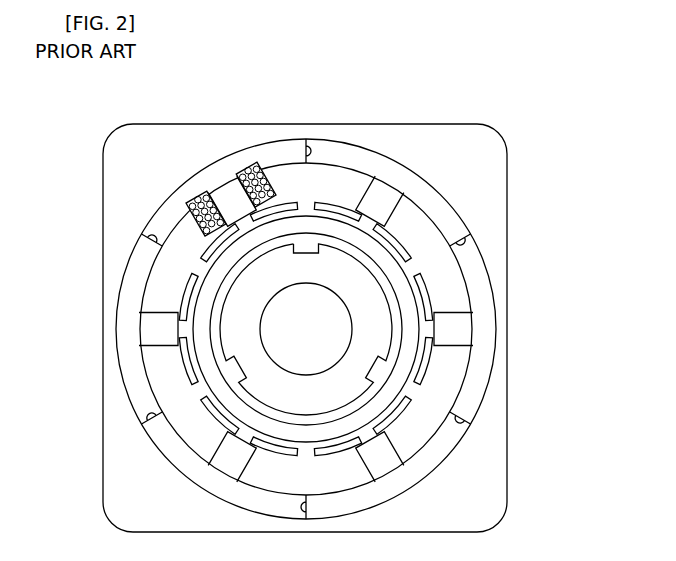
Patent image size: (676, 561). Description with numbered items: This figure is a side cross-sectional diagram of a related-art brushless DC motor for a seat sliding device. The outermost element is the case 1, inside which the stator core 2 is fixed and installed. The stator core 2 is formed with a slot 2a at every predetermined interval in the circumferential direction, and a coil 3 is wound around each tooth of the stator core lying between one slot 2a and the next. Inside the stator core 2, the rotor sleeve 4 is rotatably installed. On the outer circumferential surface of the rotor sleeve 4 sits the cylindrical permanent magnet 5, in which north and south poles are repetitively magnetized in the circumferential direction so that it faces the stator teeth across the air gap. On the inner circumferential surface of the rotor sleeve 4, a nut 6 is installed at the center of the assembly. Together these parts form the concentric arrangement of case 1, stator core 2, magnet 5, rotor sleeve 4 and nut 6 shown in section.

The case 1 is at (140, 143).
The stator core 2 is at (343, 152).
The slot 2a is at (225, 197).
The coil 3 is at (257, 165).
The rotor sleeve 4 is at (398, 323).
The cylindrical permanent magnet 5 is at (403, 360).
The nut 6 is at (367, 293).